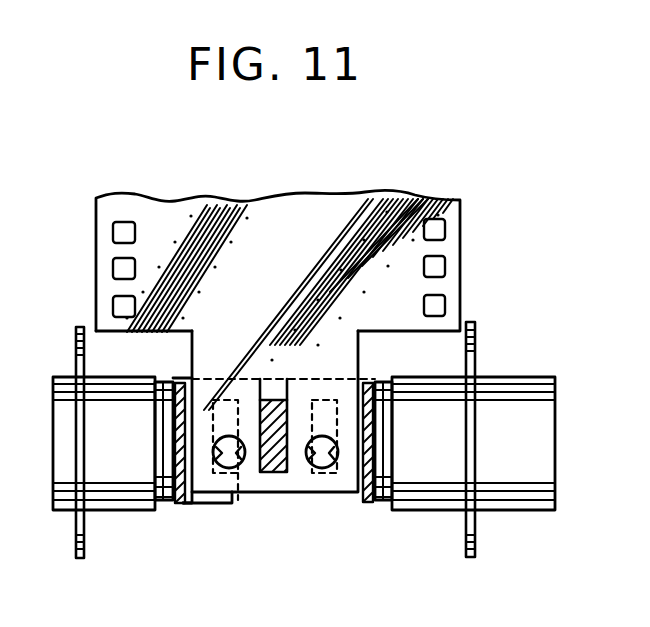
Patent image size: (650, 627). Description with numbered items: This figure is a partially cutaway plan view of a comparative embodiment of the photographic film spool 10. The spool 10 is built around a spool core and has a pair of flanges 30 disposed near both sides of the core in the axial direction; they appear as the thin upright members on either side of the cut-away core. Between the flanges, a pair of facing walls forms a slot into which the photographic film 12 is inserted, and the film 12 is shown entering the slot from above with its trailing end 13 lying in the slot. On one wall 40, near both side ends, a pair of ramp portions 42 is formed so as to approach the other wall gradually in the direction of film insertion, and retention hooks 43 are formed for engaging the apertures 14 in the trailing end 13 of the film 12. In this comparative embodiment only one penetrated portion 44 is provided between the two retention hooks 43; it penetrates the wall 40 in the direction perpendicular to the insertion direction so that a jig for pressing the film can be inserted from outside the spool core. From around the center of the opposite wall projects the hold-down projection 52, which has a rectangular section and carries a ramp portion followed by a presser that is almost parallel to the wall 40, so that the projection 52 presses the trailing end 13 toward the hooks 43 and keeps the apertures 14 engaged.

The photographic film spool 10 is at (290, 182).
The photographic film 12 is at (460, 252).
The trailing end 13 is at (187, 506).
The apertures 14 is at (213, 453).
The flanges 30 is at (85, 540).
The wall 40 is at (227, 500).
The ramp portions 42 is at (235, 400).
The retention hooks 43 is at (243, 461).
The penetrated portion 44 is at (300, 478).
The hold-down projection 52 is at (273, 400).